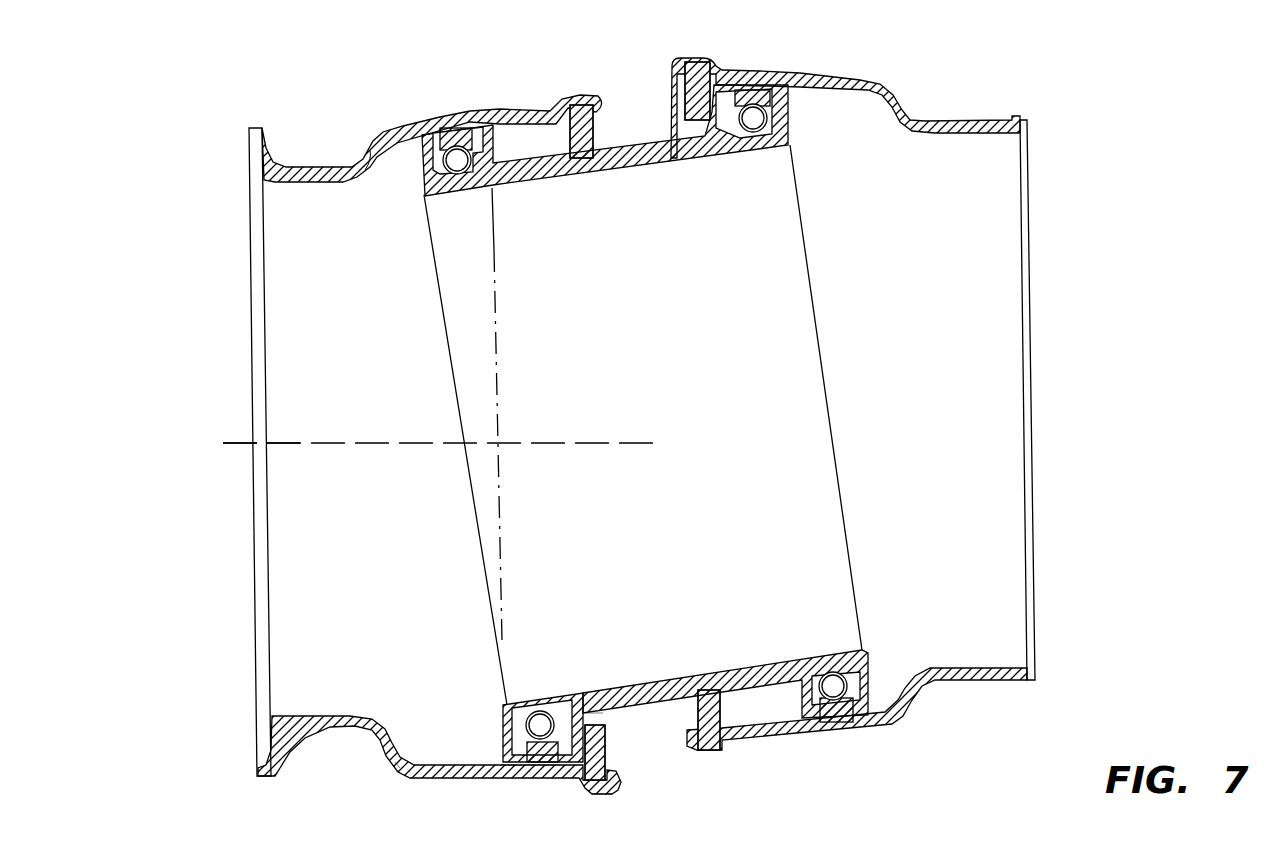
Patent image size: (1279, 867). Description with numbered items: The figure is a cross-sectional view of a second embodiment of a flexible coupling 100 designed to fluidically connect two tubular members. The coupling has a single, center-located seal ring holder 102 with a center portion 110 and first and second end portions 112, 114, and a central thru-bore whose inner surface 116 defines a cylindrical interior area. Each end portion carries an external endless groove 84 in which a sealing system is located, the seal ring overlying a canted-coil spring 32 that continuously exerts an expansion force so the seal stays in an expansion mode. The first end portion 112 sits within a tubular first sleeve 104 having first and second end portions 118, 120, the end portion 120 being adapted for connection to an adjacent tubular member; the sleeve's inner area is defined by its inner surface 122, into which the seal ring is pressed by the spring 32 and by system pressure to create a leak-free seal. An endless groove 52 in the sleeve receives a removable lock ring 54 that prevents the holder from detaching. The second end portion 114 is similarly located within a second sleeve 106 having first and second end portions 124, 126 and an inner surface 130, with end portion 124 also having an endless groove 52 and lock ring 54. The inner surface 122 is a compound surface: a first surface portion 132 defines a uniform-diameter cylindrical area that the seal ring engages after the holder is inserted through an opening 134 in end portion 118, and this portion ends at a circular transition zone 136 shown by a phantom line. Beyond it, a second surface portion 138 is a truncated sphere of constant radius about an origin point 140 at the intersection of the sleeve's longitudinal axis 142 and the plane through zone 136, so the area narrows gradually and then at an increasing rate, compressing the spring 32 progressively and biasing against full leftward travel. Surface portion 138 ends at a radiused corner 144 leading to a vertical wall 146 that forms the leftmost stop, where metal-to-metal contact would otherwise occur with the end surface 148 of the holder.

The flexible coupling 100 is at (630, 435).
The seal ring holder 102 is at (515, 460).
The first sleeve 104 is at (418, 454).
The second sleeve 106 is at (884, 402).
The center portion 110 is at (640, 142).
The first end portion 112 is at (503, 752).
The second end portion 114 is at (868, 667).
The inner surface 116 is at (633, 168).
The first end portion 118 is at (614, 790).
The second end portion 120 is at (253, 128).
The inner surface 122 is at (372, 710).
The first end portion 124 is at (712, 62).
The second end portion 126 is at (1030, 120).
The inner surface 130 is at (902, 138).
The first surface portion 132 is at (546, 118).
The opening 134 is at (592, 717).
The transition zone 136 is at (497, 298).
The second surface portion 138 is at (430, 757).
The origin point 140 is at (500, 442).
The longitudinal axis 142 is at (238, 447).
The radiused corner 144 is at (388, 142).
The vertical wall 146 is at (383, 160).
The end surface 148 is at (420, 185).
The canted-coil spring 32 is at (531, 718).
The external endless groove 84 is at (550, 705).
The endless groove 52 is at (722, 745).
The lock ring 54 is at (605, 748).